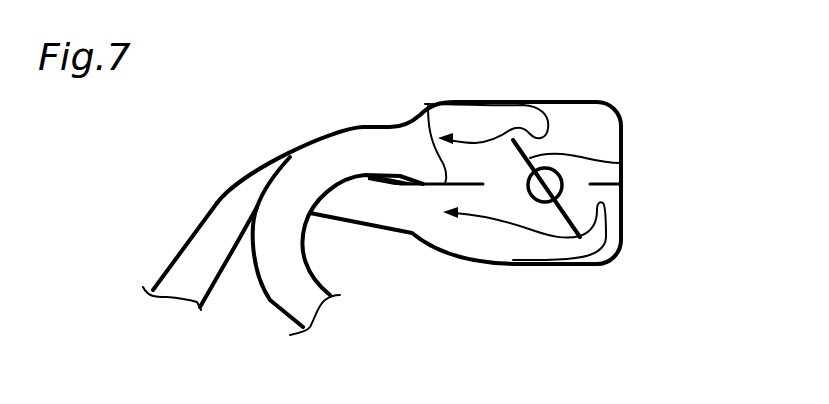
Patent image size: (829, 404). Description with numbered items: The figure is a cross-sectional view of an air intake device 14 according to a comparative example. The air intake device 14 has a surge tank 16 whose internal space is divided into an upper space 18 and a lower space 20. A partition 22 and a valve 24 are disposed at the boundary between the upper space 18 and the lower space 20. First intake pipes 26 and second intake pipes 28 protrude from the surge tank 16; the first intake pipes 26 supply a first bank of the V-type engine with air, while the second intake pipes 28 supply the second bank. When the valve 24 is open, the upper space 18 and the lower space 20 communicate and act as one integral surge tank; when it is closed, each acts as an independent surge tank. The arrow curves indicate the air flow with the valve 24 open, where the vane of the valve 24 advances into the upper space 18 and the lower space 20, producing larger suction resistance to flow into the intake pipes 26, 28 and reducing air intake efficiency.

The air intake device 14 is at (347, 117).
The surge tank 16 is at (558, 101).
The upper space 18 is at (583, 140).
The lower space 20 is at (483, 250).
The partition 22 is at (429, 129).
The valve 24 is at (620, 163).
The first intake pipes 26 is at (307, 268).
The second intake pipes 28 is at (182, 225).